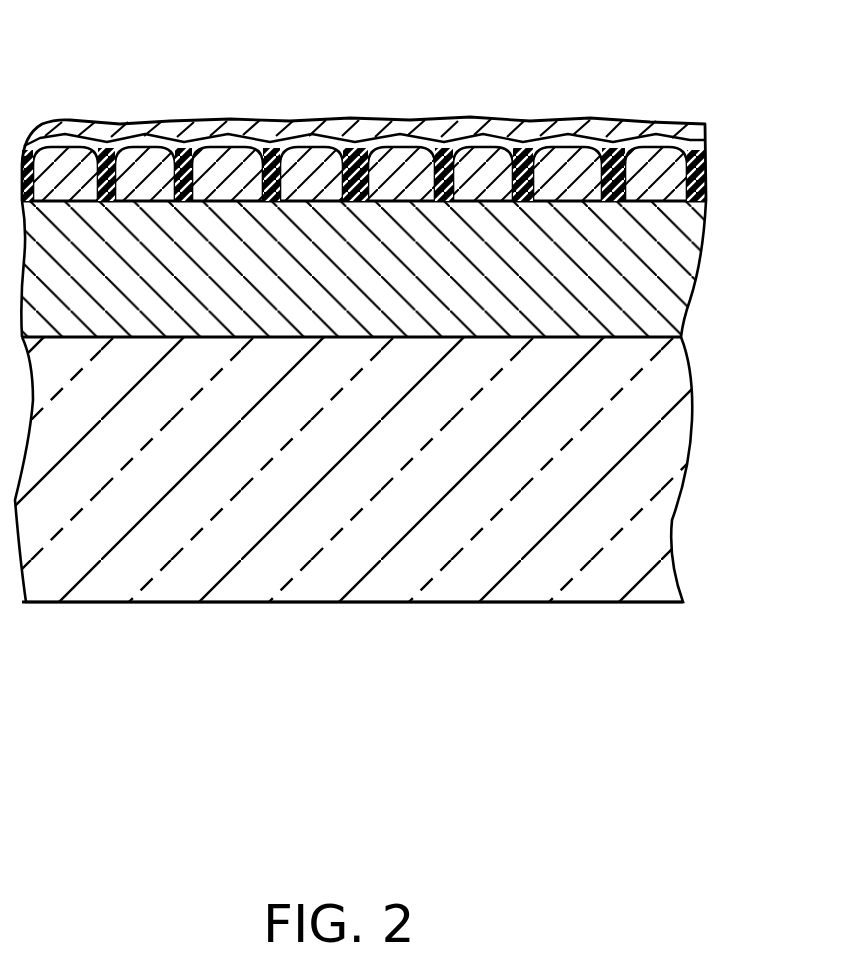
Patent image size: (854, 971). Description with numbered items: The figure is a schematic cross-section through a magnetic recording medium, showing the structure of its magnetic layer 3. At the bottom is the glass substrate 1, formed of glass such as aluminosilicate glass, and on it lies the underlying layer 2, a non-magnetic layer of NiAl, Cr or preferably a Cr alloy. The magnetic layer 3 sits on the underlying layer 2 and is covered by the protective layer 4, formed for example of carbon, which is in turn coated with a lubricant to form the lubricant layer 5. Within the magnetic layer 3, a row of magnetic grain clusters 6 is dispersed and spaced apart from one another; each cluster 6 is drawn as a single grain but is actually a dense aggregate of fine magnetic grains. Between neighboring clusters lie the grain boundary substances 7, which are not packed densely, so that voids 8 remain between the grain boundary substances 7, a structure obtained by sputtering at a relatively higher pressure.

The glass substrate 1 is at (662, 502).
The underlying layer 2 is at (677, 280).
The magnetic layer 3 is at (407, 103).
The protective layer 4 is at (705, 148).
The lubricant layer 5 is at (668, 122).
The magnetic grain cluster 6 is at (93, 128).
The grain boundary substance 7 is at (620, 148).
The void 8 is at (524, 165).